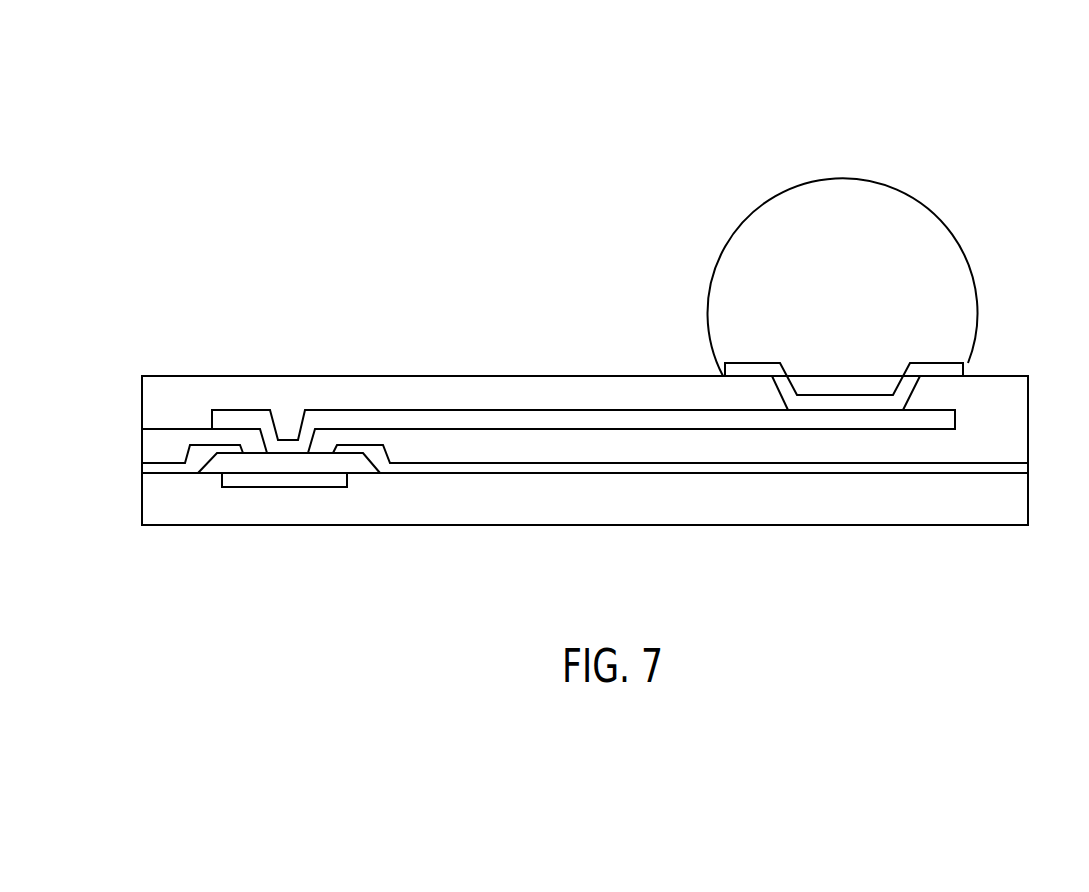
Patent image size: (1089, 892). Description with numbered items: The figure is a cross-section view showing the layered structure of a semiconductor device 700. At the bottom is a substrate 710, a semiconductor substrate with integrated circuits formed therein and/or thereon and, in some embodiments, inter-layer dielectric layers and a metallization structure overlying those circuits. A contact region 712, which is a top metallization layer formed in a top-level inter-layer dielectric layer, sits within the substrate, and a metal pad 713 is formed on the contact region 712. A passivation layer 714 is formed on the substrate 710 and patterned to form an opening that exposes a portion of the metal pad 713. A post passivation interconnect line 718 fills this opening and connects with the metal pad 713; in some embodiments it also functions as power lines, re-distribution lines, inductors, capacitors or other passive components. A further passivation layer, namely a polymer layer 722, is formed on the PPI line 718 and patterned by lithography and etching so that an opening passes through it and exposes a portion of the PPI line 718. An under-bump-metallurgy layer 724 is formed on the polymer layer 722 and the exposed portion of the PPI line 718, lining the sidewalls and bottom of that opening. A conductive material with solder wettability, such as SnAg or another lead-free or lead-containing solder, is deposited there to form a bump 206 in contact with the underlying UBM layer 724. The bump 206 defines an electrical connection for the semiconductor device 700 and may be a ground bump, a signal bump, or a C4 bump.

The semiconductor device 700 is at (1006, 146).
The bump 206 is at (940, 248).
The under-bump-metallurgy (UBM) layer 724 is at (957, 371).
The polymer layer 722 is at (1017, 402).
The post passivation interconnect (PPI) line 718 is at (710, 420).
The passivation layer 714 is at (1015, 468).
The metal pad 713 is at (355, 465).
The contact region 712 is at (252, 482).
The substrate 710 is at (1015, 500).